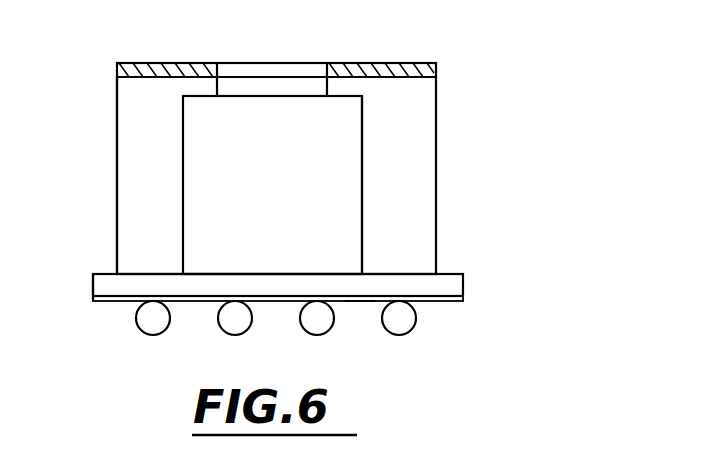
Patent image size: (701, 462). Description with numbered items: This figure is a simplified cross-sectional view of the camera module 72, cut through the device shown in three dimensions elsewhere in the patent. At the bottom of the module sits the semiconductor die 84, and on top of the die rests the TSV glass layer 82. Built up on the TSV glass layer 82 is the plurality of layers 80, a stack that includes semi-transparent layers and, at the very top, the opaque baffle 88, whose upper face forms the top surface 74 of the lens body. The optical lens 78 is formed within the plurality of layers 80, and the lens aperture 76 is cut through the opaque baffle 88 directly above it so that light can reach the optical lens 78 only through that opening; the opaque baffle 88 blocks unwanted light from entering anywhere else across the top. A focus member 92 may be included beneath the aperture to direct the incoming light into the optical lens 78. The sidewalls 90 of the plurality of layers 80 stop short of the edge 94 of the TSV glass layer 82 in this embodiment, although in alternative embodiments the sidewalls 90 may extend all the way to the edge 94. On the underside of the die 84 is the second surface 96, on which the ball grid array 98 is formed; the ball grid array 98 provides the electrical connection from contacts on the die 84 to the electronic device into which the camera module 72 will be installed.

The camera module 72 is at (518, 112).
The top surface 74 is at (125, 55).
The lens aperture 76 is at (267, 73).
The optical lens 78 is at (322, 160).
The plurality of layers 80 is at (392, 209).
The TSV glass layer 82 is at (453, 284).
The semiconductor die 84 is at (96, 302).
The opaque baffle 88 is at (163, 73).
The sidewalls 90 is at (110, 178).
The focus member 92 is at (317, 88).
The edge 94 is at (88, 285).
The second surface 96 is at (360, 312).
The ball grid array 98 is at (444, 321).